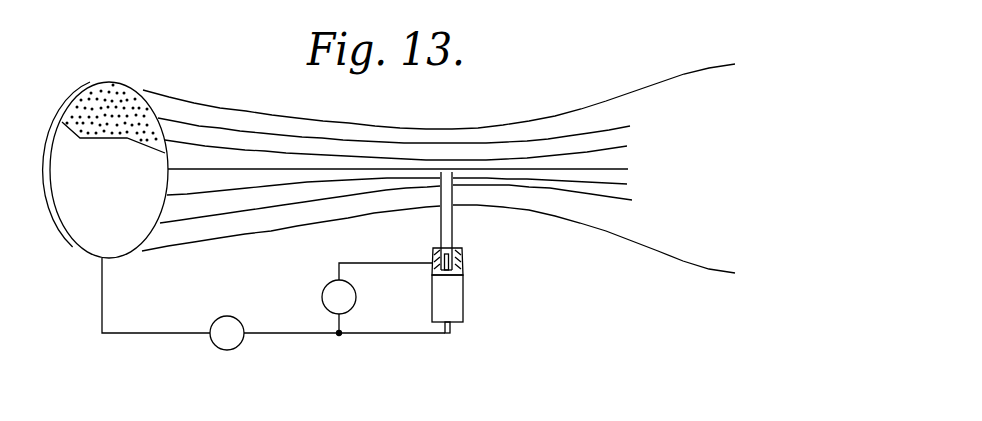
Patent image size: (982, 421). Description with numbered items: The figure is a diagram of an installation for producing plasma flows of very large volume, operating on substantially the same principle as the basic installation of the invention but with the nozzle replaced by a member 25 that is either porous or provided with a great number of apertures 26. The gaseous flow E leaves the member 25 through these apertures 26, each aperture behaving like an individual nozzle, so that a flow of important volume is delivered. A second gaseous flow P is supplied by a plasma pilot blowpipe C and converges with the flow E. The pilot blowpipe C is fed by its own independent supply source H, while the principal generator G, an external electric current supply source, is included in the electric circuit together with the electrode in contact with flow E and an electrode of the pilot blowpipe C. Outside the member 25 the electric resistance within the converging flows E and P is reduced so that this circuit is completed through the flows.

The member 25 is at (72, 248).
The apertures 26 is at (119, 118).
The gaseous flow E is at (292, 130).
The gaseous flow P is at (447, 232).
The pilot blowpipe C is at (462, 298).
The independent supply source H is at (373, 299).
The principal generator G is at (273, 307).